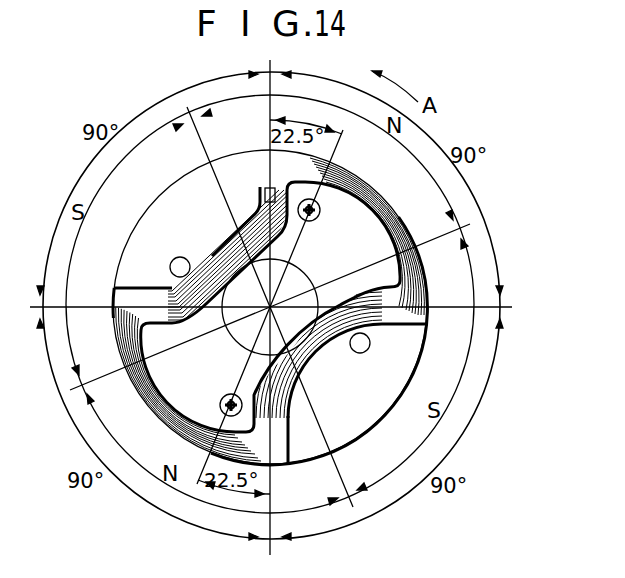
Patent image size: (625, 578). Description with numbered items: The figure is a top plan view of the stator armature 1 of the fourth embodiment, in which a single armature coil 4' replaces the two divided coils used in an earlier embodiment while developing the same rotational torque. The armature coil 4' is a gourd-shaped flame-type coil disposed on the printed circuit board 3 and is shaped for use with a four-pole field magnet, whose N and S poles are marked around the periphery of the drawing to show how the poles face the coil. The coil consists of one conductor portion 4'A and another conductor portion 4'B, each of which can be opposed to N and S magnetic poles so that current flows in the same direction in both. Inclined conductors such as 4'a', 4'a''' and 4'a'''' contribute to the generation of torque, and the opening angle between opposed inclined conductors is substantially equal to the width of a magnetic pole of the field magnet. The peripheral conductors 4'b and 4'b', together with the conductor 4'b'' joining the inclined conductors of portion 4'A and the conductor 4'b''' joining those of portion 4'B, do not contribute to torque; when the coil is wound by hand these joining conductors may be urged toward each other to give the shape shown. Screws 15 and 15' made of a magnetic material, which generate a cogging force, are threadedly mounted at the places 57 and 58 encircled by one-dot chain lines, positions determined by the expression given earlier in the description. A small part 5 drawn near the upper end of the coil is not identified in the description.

The stator armature 1 is at (440, 128).
The printed circuit board 3 is at (346, 433).
The armature coil 4' is at (315, 307).
The conductor portion 4'A is at (257, 251).
The conductor portion 4'B is at (326, 374).
The inclined conductor 4'a' is at (168, 215).
The inclined conductor 4'a''' is at (383, 364).
The inclined conductor 4'a'''' is at (317, 457).
The peripheral conductor 4'b is at (367, 229).
The peripheral conductor 4'b' is at (188, 384).
The conductor 4'b'' is at (231, 255).
The conductor 4'b''' is at (313, 349).
The permanent magnet 5 is at (262, 190).
The screw 15 is at (318, 219).
The screw 15' is at (217, 384).
The place 57 is at (368, 350).
The place 58 is at (172, 263).